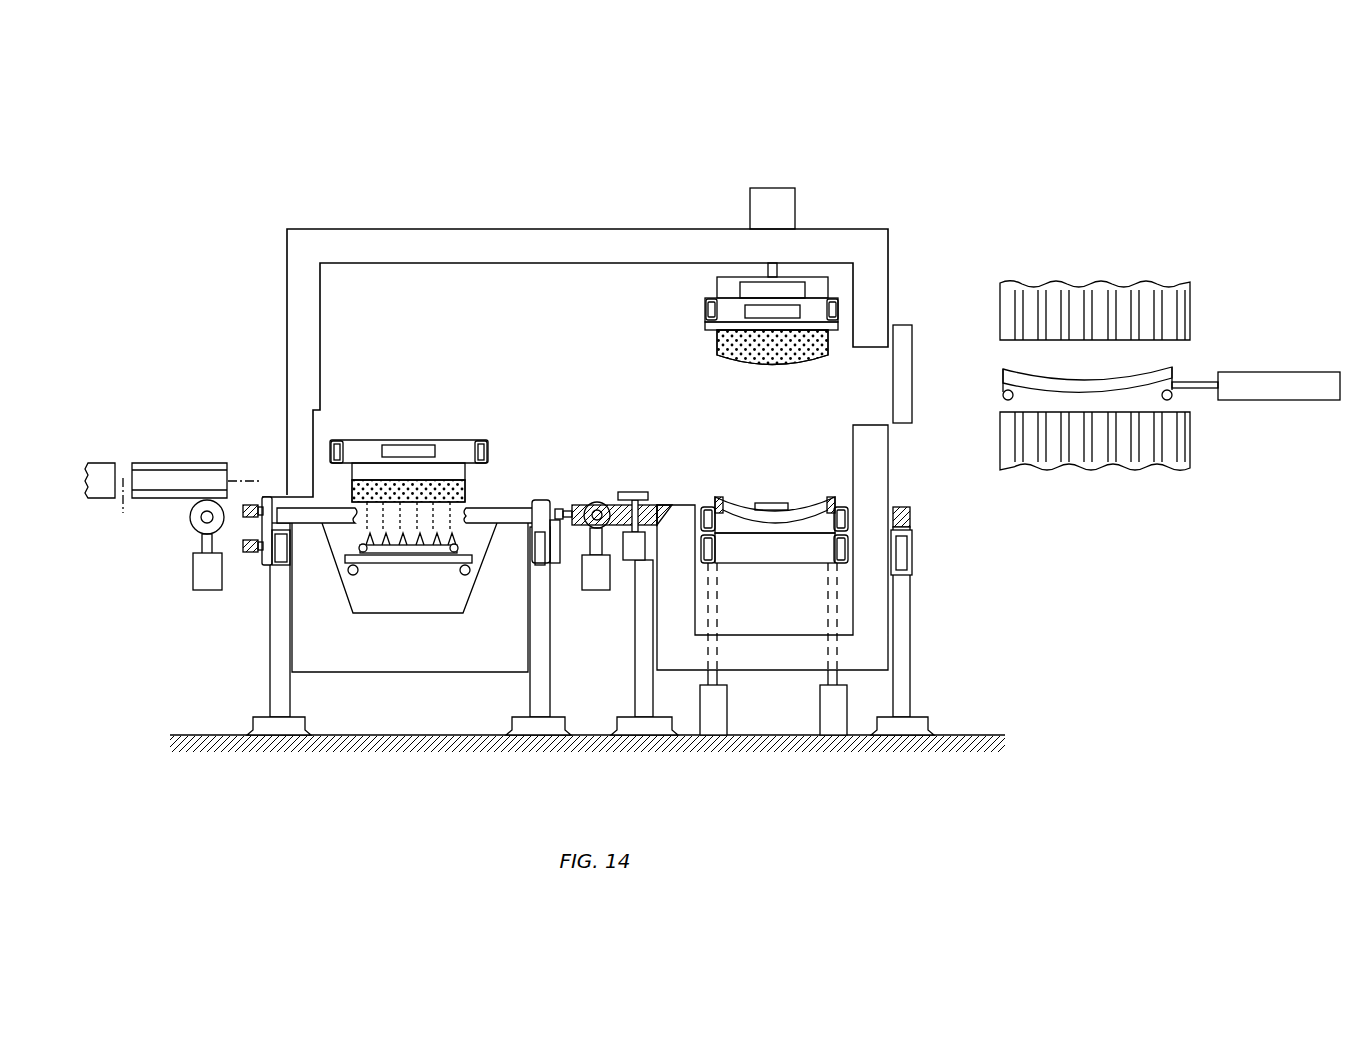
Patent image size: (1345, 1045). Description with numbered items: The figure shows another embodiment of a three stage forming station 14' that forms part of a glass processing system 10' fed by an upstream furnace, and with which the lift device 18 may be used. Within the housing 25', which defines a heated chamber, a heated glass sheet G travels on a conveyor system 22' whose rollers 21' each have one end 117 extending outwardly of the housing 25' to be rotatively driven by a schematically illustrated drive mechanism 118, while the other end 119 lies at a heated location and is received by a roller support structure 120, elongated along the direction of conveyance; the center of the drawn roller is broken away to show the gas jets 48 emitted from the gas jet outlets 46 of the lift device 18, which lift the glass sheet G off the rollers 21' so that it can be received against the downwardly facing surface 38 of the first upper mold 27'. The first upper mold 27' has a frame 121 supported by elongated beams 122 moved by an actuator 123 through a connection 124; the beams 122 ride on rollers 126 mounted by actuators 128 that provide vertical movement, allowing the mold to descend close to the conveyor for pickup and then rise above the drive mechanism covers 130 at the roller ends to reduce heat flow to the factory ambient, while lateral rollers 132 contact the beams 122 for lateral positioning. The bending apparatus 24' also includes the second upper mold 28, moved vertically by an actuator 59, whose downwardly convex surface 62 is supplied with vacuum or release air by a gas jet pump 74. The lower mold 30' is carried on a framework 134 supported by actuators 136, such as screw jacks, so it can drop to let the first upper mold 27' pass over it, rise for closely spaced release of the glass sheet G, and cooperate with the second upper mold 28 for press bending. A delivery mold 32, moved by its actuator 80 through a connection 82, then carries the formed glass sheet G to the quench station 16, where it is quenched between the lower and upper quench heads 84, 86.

The glass processing system 10' is at (288, 169).
The forming station 14' is at (575, 333).
The bending apparatus 24' is at (664, 263).
The housing 25' is at (892, 295).
The actuator 59 is at (797, 205).
The gas jet pump 74 is at (790, 283).
The second upper mold 28 is at (703, 345).
The downwardly facing surface 62 is at (776, 363).
The lower mold 30' is at (758, 496).
The framework 134 is at (851, 536).
The actuators 136 is at (727, 712).
The frame 121 is at (498, 445).
The glass sheet G is at (410, 468).
The first upper mold 27' is at (345, 434).
The downwardly facing surface 38 is at (452, 490).
The conveyor system 22' is at (455, 479).
The gas jet outlets 46 is at (420, 553).
The gas jets 48 is at (376, 563).
The lift device 18 is at (350, 549).
The roller end 117 is at (322, 527).
The roller end 119 is at (477, 523).
The rollers 21' is at (268, 548).
The drive mechanism covers 130 is at (273, 500).
The drive mechanism 118 is at (226, 481).
The connection 124 is at (121, 510).
The actuator 123 is at (100, 462).
The elongated beams 122 is at (150, 462).
The rollers 126 is at (190, 520).
The actuators 128 is at (193, 575).
The lateral rollers 132 is at (637, 490).
The roller support structure 120 is at (633, 495).
The quench station 16 is at (1170, 250).
The upper quench head 86 is at (1190, 314).
The lower quench head 84 is at (1190, 456).
The delivery mold 32 is at (1188, 398).
The connection 82 is at (1198, 385).
The actuator 80 is at (1275, 372).